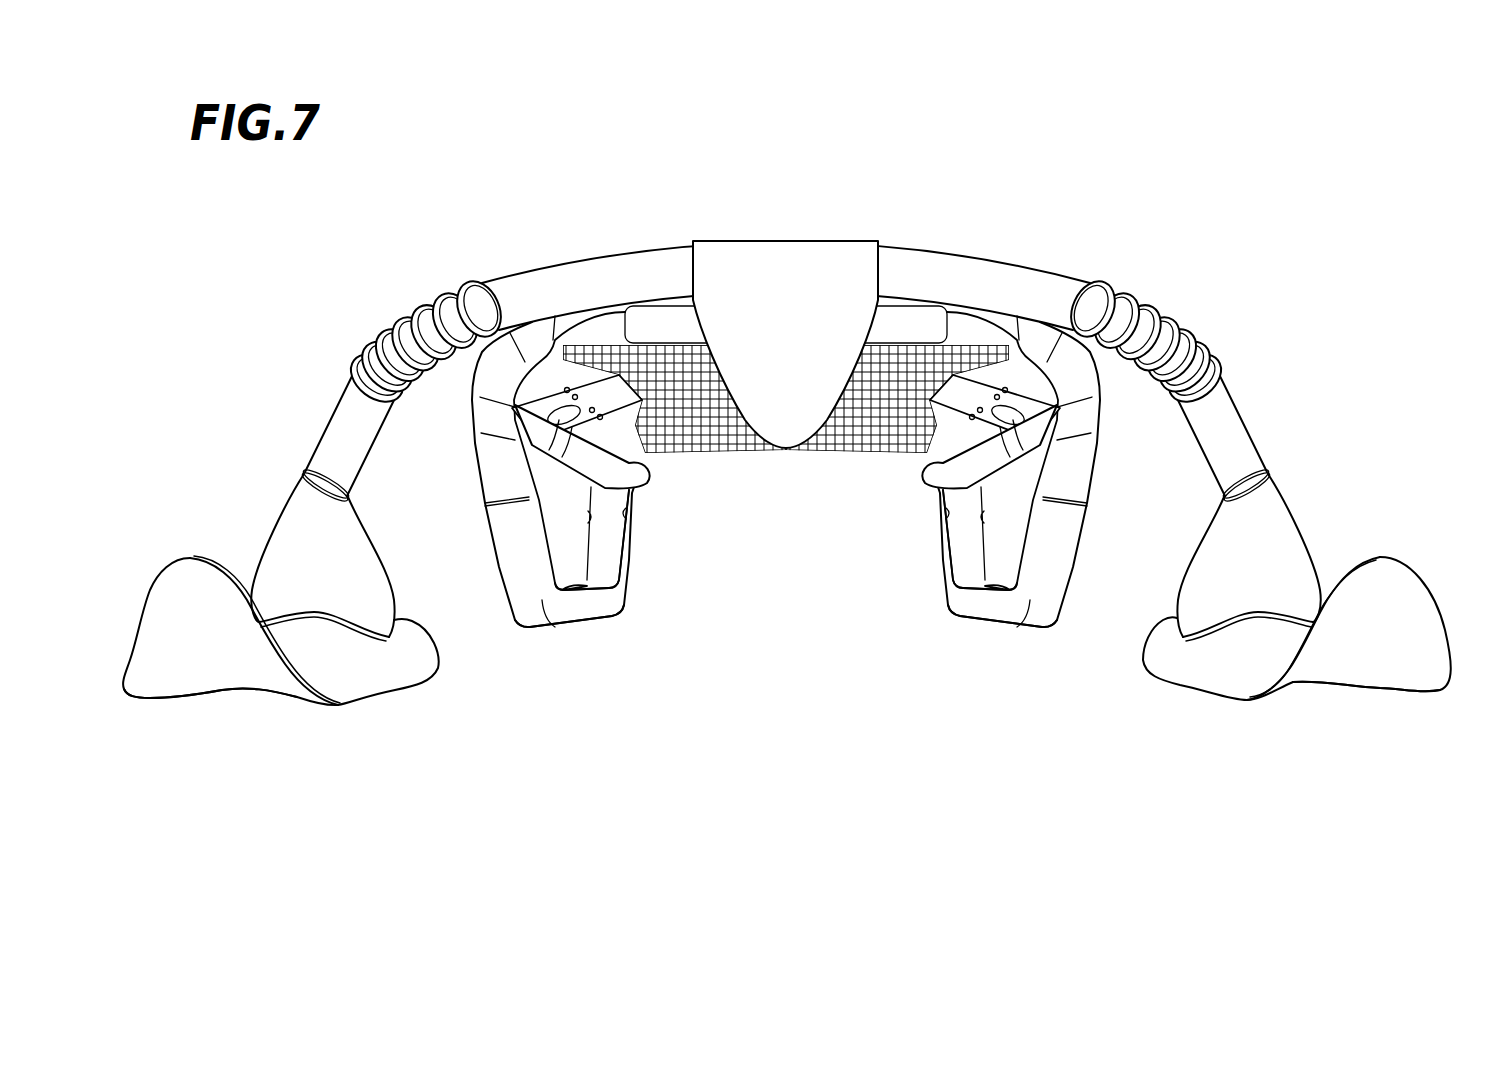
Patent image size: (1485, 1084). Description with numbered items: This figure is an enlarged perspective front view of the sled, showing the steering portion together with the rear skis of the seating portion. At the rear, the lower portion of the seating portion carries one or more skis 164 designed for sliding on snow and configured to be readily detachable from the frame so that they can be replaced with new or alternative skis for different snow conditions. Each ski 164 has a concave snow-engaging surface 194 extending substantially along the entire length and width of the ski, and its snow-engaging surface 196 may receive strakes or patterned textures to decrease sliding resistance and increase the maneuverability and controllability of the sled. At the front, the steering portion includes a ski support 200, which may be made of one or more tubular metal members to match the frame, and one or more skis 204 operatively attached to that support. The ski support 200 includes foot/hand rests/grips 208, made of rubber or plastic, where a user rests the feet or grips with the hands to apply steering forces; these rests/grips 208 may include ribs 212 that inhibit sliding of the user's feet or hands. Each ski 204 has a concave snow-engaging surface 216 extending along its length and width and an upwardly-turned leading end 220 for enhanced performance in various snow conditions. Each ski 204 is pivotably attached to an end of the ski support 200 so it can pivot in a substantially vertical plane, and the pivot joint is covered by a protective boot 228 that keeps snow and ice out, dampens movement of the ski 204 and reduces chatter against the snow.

The ski 164 is at (627, 600).
The concave snow-engaging surface 194 is at (530, 630).
The snow-engaging surface 196 is at (557, 632).
The ski support 200 is at (958, 240).
The ski 204 is at (394, 703).
The foot/hand rests/grips 208 is at (1185, 316).
The ribs 212 is at (437, 318).
The concave snow-engaging surface 216 is at (237, 696).
The upwardly-turned leading end 220 is at (190, 558).
The protective boot 228 is at (273, 530).